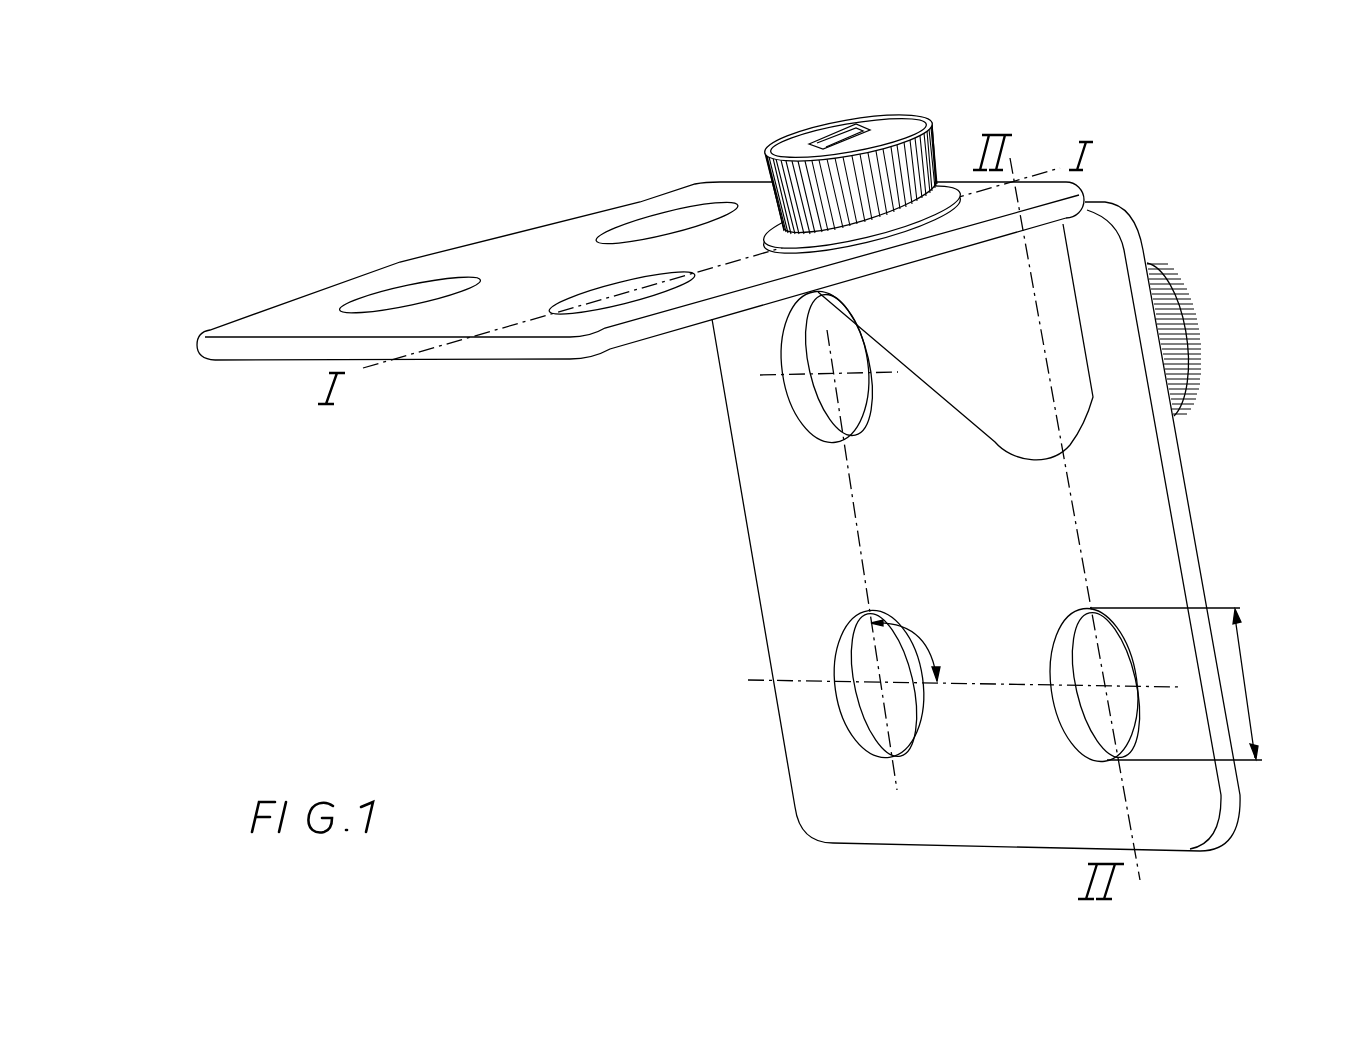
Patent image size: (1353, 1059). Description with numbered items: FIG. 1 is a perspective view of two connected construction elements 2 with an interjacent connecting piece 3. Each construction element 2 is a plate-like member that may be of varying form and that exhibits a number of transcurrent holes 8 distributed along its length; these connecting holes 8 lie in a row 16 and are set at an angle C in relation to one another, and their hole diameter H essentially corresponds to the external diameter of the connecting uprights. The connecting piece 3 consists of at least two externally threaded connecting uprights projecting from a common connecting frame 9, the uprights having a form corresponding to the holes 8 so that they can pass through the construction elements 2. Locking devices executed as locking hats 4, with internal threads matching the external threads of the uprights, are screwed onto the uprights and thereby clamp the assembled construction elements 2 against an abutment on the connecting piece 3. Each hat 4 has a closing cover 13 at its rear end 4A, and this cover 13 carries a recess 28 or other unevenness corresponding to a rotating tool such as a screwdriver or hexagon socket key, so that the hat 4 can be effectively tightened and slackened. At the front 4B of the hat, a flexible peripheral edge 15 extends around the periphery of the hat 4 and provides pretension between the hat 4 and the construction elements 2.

The construction element 2 is at (750, 415).
The connecting piece 3 is at (956, 517).
The locking hat 4 is at (1014, 223).
The rear end of the hat 4A is at (853, 100).
The front of the hat 4B is at (939, 175).
The transcurrent hole 8 is at (857, 702).
The connecting frame 9 is at (1067, 412).
The closing cover 13 is at (878, 126).
The flexible peripheral edge 15 is at (778, 238).
The row 16 is at (853, 532).
The recess 28 is at (815, 141).